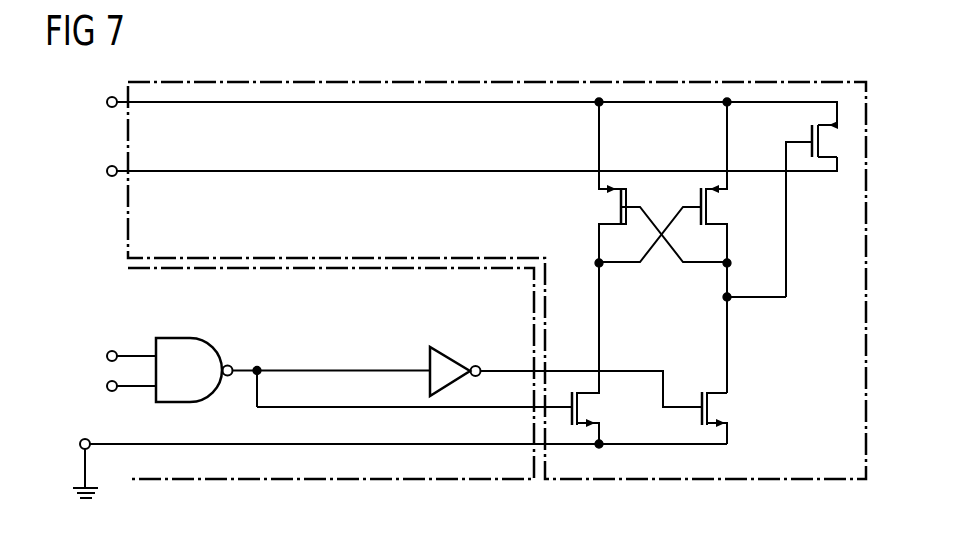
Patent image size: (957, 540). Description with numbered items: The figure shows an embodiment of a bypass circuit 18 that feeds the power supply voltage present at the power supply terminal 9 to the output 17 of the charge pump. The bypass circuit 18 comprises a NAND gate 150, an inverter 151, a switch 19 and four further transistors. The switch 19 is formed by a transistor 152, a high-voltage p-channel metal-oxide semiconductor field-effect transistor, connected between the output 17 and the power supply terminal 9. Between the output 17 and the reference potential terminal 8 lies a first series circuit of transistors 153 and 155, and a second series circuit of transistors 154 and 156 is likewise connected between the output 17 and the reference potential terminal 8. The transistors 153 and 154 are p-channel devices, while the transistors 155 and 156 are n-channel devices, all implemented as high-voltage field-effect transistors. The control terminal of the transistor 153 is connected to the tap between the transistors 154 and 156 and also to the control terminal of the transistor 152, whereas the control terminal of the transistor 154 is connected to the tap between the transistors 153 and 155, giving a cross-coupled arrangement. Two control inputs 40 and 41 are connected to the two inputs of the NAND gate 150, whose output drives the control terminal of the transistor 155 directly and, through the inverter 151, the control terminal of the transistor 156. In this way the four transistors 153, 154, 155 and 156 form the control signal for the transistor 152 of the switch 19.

The bypass circuit 18 is at (866, 78).
The output of the charge pump 17 is at (107, 101).
The power supply terminal 9 is at (107, 170).
The transistor 152 is at (809, 136).
The switch 19 is at (832, 195).
The transistor 153 is at (617, 209).
The transistor 154 is at (710, 212).
The NAND gate 150 is at (190, 338).
The control input 40 is at (107, 355).
The control input 41 is at (107, 385).
The inverter 151 is at (447, 352).
The transistor 155 is at (584, 411).
The transistor 156 is at (714, 411).
The reference potential terminal 8 is at (98, 493).